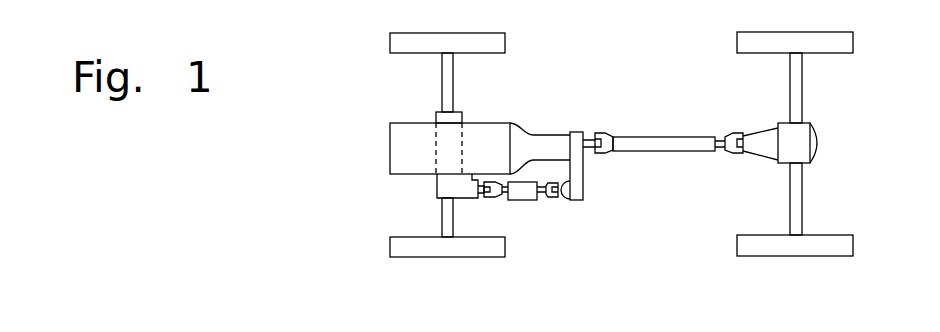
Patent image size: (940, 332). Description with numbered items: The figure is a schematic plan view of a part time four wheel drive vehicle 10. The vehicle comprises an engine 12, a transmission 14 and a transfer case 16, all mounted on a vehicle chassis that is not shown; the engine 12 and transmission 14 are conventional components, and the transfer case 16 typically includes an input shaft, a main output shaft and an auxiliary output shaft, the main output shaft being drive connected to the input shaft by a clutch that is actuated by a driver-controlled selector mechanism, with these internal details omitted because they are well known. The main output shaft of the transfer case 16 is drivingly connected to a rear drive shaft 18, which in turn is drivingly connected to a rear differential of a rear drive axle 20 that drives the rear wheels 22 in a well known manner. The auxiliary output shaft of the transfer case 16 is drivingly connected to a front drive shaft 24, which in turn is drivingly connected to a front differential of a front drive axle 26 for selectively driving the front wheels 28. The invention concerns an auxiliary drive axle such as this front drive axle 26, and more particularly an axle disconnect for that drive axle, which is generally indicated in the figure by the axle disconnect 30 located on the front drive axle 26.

The part time four wheel drive vehicle 10 is at (604, 132).
The engine 12 is at (403, 148).
The transmission 14 is at (528, 145).
The transfer case 16 is at (578, 198).
The rear drive shaft 18 is at (670, 145).
The rear drive axle 20 is at (802, 146).
The rear wheels 22 is at (840, 42).
The front drive shaft 24 is at (525, 199).
The front drive axle 26 is at (448, 190).
The front wheels 28 is at (403, 45).
The axle disconnect 30 is at (463, 151).